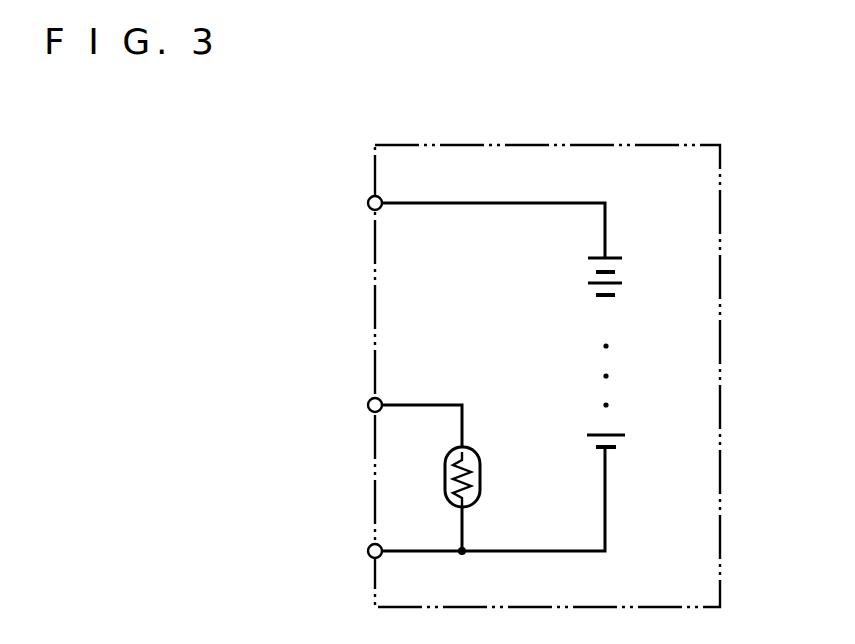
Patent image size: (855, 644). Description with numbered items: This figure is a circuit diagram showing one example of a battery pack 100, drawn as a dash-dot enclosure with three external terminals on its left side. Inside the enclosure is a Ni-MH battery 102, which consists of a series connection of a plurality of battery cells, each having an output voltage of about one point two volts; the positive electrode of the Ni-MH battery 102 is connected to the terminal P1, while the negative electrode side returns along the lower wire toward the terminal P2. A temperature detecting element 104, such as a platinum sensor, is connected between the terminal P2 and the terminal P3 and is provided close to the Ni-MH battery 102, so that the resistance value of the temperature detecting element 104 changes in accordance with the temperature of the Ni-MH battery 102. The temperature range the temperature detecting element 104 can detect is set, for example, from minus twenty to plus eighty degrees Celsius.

The battery pack 100 is at (706, 190).
The Ni-MH battery 102 is at (619, 252).
The temperature detecting element 104 is at (481, 472).
The terminal P1 is at (367, 208).
The terminal P2 is at (367, 554).
The terminal P3 is at (367, 406).